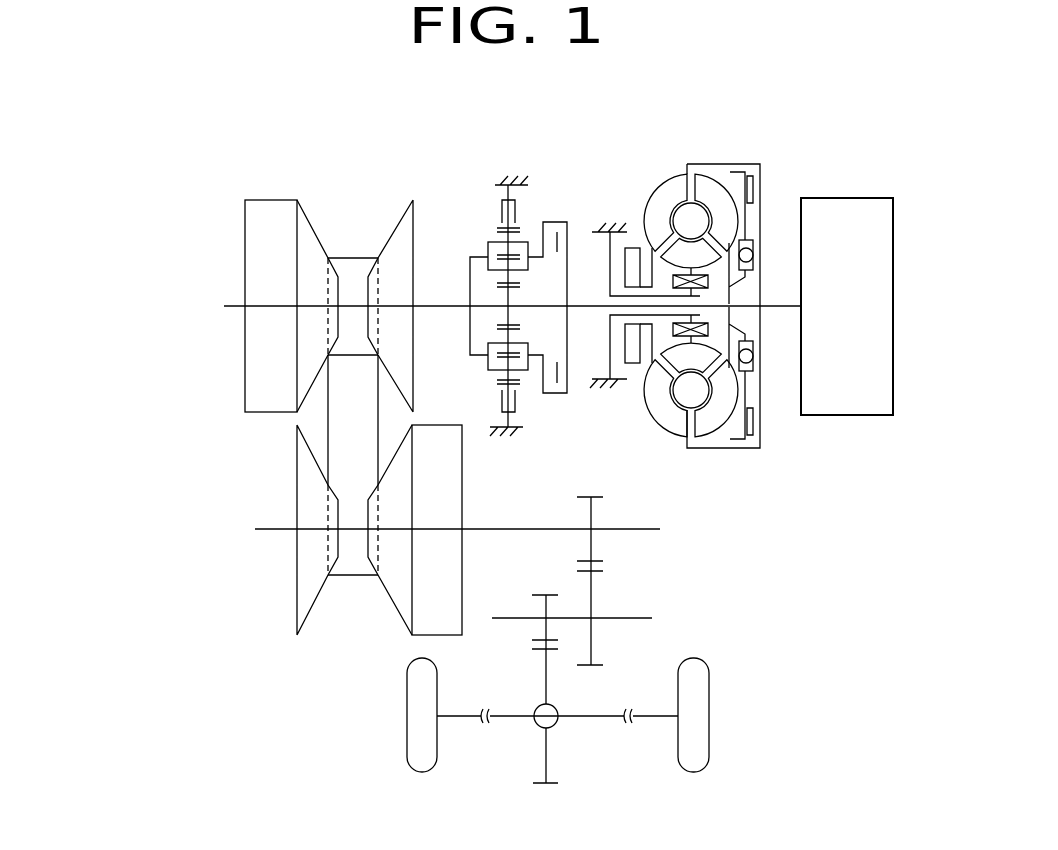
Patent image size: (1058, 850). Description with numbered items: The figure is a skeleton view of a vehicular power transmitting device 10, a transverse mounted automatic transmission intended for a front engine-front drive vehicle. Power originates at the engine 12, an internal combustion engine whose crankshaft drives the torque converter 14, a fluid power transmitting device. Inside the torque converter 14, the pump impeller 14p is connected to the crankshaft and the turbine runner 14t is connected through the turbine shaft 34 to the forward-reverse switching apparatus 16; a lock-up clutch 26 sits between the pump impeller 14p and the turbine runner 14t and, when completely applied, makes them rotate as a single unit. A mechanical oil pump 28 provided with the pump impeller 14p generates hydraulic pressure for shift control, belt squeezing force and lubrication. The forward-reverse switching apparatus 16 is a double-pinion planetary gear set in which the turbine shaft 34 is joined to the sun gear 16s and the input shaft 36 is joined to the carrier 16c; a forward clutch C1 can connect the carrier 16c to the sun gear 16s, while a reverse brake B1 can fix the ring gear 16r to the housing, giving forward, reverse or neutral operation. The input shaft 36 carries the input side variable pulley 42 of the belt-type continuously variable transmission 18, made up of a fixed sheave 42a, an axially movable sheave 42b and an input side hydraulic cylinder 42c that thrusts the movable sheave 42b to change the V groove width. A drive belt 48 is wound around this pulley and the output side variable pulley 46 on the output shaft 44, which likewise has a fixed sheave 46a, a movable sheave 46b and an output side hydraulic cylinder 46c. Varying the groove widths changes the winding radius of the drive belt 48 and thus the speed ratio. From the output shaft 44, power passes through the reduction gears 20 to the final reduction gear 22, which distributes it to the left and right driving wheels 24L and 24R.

The vehicular power transmitting device 10 is at (848, 140).
The engine 12 is at (885, 263).
The torque converter 14 is at (696, 287).
The pump impeller 14p is at (662, 413).
The turbine runner 14t is at (708, 418).
The forward-reverse switching apparatus 16 is at (494, 260).
The carrier 16c is at (480, 254).
The sun gear 16s is at (500, 326).
The ring gear 16r is at (500, 393).
The belt-type continuously variable transmission 18 is at (369, 479).
The reduction gears 20 is at (663, 583).
The final reduction gear 22 is at (535, 716).
The left driving wheel 24L is at (423, 763).
The right driving wheel 24R is at (695, 763).
The lock-up clutch 26 is at (755, 190).
The mechanical oil pump 28 is at (633, 252).
The turbine shaft 34 is at (583, 307).
The input shaft 36 is at (433, 303).
The input side variable pulley 42 is at (308, 325).
The fixed sheave 42a is at (400, 235).
The movable sheave 42b is at (307, 232).
The input side hydraulic cylinder 42c is at (257, 222).
The output shaft 44 is at (523, 530).
The output side variable pulley 46 is at (429, 550).
The fixed sheave 46a is at (305, 588).
The movable sheave 46b is at (398, 585).
The output side hydraulic cylinder 46c is at (463, 512).
The drive belt 48 is at (355, 258).
The reverse brake B1 is at (496, 303).
The forward clutch C1 is at (551, 294).